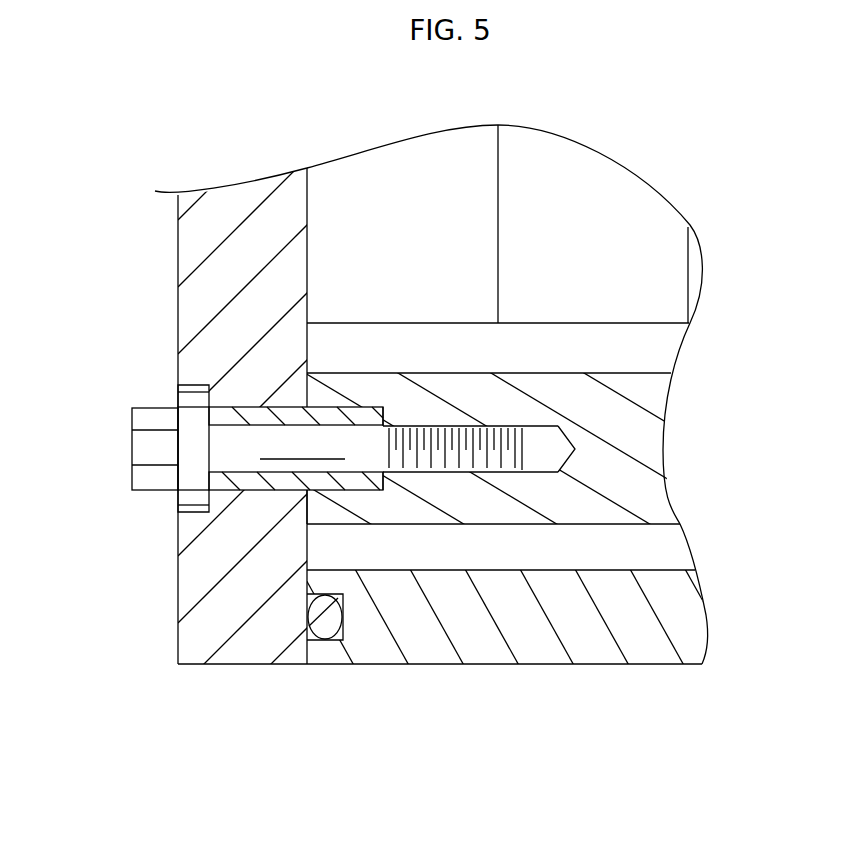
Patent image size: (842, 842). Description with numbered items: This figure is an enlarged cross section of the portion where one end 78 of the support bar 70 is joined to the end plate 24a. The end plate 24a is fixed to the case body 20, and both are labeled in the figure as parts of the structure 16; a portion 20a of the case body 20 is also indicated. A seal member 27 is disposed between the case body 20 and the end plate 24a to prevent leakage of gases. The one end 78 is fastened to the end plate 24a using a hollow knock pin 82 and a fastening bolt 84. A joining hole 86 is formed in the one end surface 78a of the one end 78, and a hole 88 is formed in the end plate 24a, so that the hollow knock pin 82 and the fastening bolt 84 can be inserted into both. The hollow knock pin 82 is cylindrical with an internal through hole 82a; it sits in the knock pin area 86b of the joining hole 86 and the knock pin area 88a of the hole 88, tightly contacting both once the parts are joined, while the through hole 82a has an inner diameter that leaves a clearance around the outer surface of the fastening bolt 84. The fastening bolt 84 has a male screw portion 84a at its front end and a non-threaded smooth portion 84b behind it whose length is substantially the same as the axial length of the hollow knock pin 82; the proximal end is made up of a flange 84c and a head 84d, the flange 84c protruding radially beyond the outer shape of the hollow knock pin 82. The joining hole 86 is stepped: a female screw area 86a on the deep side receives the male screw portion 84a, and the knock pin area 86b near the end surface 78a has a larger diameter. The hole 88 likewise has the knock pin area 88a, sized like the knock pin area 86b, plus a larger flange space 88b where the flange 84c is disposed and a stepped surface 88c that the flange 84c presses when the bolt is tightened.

The housing 16 is at (403, 414).
The case body 20 is at (466, 631).
The outer surface of lower housing member 20a is at (664, 570).
The end plate 24a is at (197, 298).
The seal member 27 is at (323, 630).
The support bar 70 is at (596, 362).
The one end of the support bar 78 is at (445, 525).
The one end surface 78a is at (302, 498).
The hollow knock pin 82 is at (470, 410).
The through hole 82a is at (368, 470).
The fastening bolt 84 is at (281, 416).
The male screw portion 84a is at (420, 426).
The smooth portion 84b is at (253, 427).
The flange 84c is at (182, 475).
The head 84d is at (147, 422).
The joining hole 86 is at (474, 367).
The female screw area 86a is at (530, 428).
The knock pin area 86b is at (373, 424).
The hole 88 is at (238, 414).
The knock pin area 88a is at (322, 415).
The flange space 88b is at (204, 388).
The stepped surface 88c is at (200, 499).